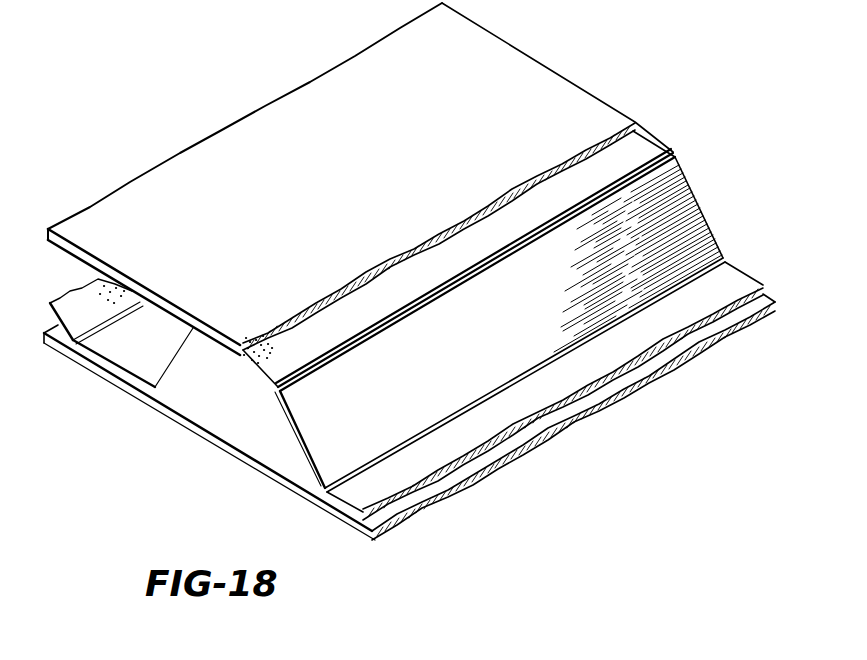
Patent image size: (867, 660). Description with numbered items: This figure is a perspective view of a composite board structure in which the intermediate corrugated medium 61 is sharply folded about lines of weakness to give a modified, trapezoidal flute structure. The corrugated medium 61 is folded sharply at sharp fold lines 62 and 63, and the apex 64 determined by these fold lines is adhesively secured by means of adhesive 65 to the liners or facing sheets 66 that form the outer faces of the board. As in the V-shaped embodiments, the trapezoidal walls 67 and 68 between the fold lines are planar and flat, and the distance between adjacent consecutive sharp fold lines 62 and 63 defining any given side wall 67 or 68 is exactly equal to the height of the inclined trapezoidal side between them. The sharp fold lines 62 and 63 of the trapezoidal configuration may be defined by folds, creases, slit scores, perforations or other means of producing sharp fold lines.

The corrugated medium 61 is at (405, 325).
The sharp fold line 62 is at (193, 331).
The sharp fold line 63 is at (155, 385).
The apex 64 is at (112, 350).
The adhesive 65 is at (256, 347).
The facing sheet 66 is at (241, 292).
The trapezoidal wall 67 is at (365, 410).
The trapezoidal wall 68 is at (160, 380).